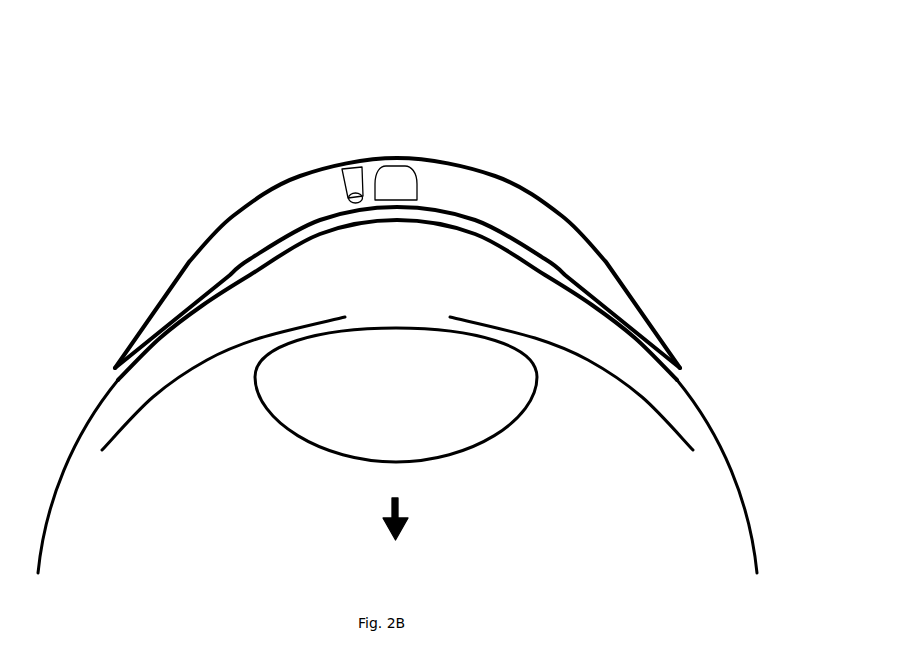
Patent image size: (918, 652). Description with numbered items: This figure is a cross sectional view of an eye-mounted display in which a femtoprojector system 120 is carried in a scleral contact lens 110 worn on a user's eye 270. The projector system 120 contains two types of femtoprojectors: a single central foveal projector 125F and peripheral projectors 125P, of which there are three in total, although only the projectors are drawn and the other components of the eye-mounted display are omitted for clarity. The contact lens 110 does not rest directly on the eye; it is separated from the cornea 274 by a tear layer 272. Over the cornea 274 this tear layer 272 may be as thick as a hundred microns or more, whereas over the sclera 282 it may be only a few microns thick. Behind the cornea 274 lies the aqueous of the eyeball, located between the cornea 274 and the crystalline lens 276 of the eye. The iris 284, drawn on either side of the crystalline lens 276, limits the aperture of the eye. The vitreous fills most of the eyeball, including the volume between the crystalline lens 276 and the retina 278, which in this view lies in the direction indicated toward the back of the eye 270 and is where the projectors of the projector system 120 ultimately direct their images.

The femtoprojector system 120 is at (389, 130).
The peripheral projector 125P is at (350, 163).
The central foveal projector 125F is at (410, 182).
The scleral contact lens 110 is at (222, 257).
The tear layer 272 is at (517, 249).
The cornea 274 is at (397, 300).
The iris 284 is at (503, 322).
The sclera 282 is at (397, 450).
The crystalline lens 276 is at (396, 395).
The eye 270 is at (397, 396).
The retina 278 is at (388, 546).